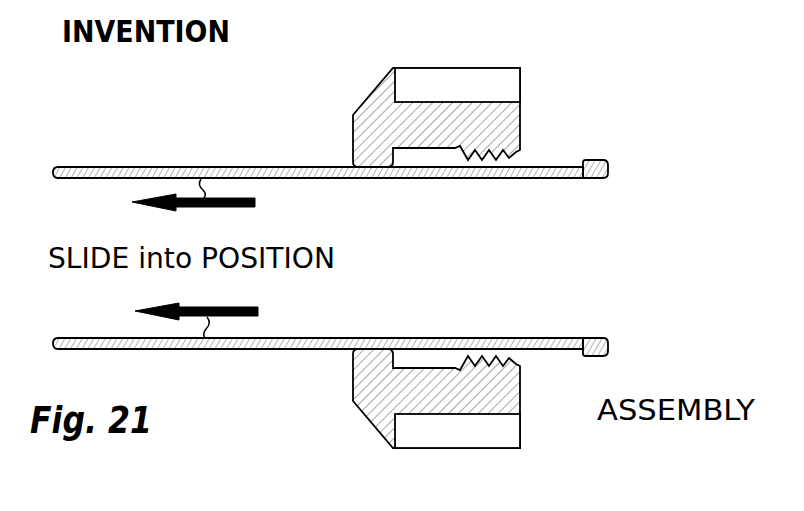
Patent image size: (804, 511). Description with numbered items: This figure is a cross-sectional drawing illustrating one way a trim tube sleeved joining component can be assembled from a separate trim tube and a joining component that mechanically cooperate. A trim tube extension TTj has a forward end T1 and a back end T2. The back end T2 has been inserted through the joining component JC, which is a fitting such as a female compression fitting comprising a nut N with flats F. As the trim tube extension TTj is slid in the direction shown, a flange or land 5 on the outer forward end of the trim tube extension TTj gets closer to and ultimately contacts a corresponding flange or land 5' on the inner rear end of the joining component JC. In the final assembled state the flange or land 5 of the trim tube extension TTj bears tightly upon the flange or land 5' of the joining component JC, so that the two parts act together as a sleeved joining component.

The back end T2 is at (135, 163).
The trim tube extension TTj is at (313, 171).
The forward end T1 is at (581, 181).
The joining component JC is at (458, 114).
The flats F is at (457, 85).
The flange or land 5 is at (344, 314).
The flange or land 5' is at (345, 366).
The nut N is at (416, 453).